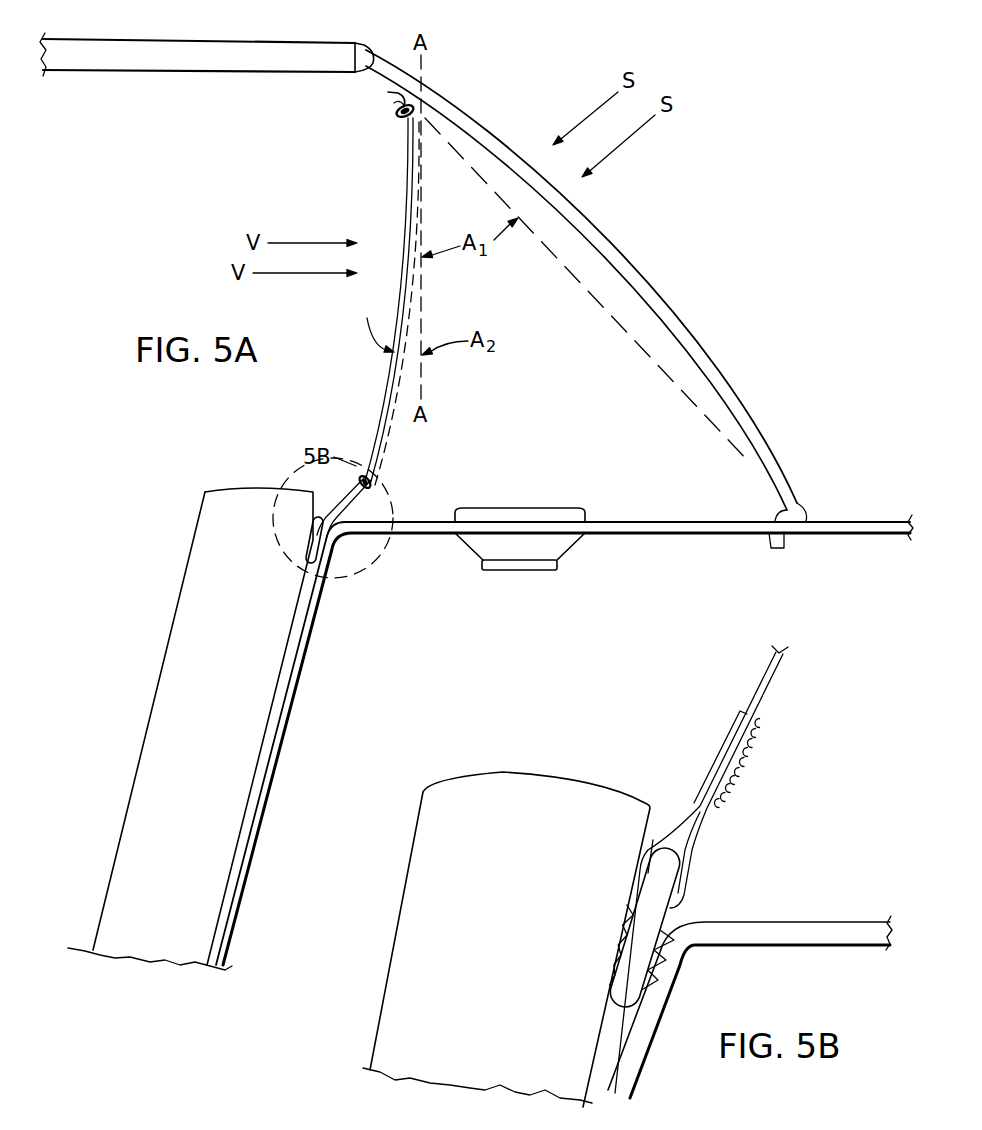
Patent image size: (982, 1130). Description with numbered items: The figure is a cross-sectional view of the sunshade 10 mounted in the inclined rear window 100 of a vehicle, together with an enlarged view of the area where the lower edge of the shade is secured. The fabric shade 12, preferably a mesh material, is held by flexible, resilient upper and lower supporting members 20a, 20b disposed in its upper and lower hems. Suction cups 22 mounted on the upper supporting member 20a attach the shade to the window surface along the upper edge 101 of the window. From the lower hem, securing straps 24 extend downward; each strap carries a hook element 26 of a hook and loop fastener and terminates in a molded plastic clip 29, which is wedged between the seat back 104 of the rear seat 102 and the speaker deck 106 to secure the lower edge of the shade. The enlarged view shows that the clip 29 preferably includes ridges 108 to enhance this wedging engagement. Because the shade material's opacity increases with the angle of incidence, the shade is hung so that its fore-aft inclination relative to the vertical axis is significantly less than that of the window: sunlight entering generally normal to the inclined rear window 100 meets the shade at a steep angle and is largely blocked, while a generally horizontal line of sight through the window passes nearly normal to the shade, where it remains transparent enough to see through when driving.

In FIG. 5A, the sunshade 10 is at (347, 219).
In FIG. 5A, the fabric shade 12 is at (405, 272).
In FIG. 5A, the upper supporting member 20a is at (401, 117).
In FIG. 5A, the lower supporting member 20b is at (372, 483).
In FIG. 5A, the suction cup 22 is at (392, 100).
In FIG. 5A, the securing strap 24 is at (376, 496).
In FIG. 5B, the securing strap 24 is at (770, 690).
In FIG. 5B, the hook element 26 is at (748, 766).
In FIG. 5A, the clip 29 is at (322, 562).
In FIG. 5B, the clip 29 is at (676, 893).
In FIG. 5A, the rear window 100 is at (622, 258).
In FIG. 5A, the upper edge of the window 101 is at (453, 108).
In FIG. 5A, the rear seat 102 is at (200, 545).
In FIG. 5B, the seat back 104 is at (600, 1035).
In FIG. 5A, the speaker deck 106 is at (645, 522).
In FIG. 5B, the speaker deck 106 is at (822, 945).
In FIG. 5B, the ridges 108 is at (660, 928).